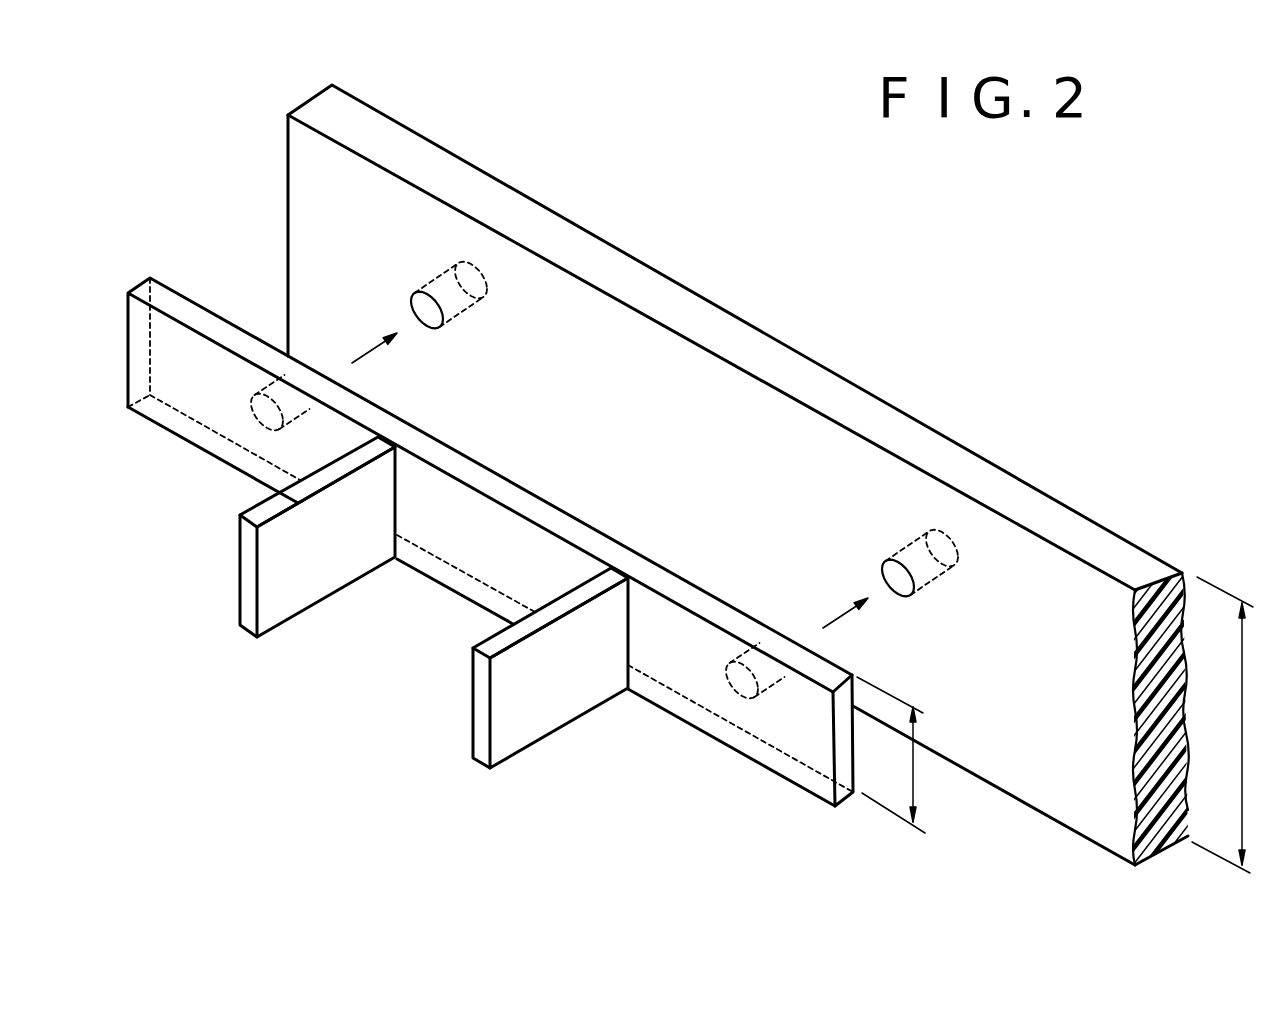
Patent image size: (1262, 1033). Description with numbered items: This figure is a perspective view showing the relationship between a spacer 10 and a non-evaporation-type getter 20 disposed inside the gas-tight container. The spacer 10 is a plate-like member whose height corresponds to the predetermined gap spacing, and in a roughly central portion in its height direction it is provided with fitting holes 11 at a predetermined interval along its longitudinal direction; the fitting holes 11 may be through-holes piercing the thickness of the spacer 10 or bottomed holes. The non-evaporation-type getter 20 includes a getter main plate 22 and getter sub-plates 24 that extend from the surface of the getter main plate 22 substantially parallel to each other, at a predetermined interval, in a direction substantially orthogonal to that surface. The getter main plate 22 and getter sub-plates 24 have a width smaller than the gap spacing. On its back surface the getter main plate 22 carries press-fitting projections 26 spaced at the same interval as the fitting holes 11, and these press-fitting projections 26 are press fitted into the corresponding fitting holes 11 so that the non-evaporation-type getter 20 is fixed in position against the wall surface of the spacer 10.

The spacer 10 is at (755, 365).
The fitting hole 11 is at (422, 307).
The non-evaporation-type getter 20 is at (540, 581).
The getter main plate 22 is at (763, 718).
The getter sub-plate 24 is at (337, 575).
The press-fitting projection 26 is at (345, 378).